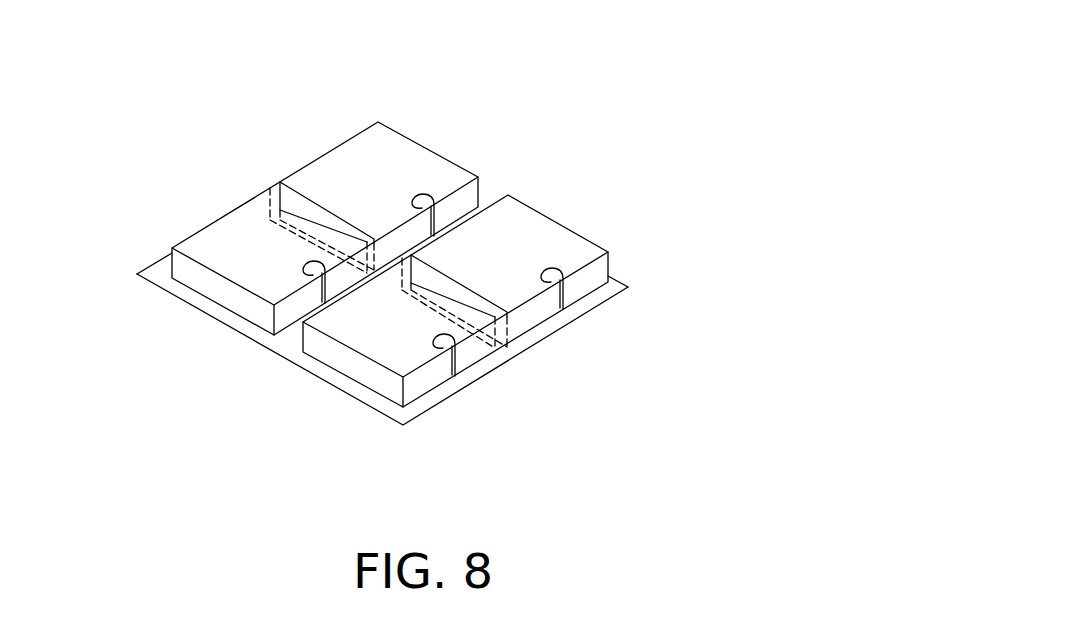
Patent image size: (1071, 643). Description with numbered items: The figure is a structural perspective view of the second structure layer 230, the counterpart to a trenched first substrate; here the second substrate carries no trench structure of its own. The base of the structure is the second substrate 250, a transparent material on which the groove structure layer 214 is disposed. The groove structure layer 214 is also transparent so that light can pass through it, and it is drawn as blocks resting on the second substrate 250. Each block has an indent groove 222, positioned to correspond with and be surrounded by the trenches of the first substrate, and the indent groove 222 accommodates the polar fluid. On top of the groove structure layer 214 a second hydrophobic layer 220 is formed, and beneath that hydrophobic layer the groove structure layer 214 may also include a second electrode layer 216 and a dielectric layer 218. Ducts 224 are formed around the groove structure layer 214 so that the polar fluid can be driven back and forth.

The second structure layer 230 is at (470, 263).
The second hydrophobic layer 220 is at (509, 327).
The groove structure layer 214 is at (553, 301).
The second electrode layer 216 is at (603, 312).
The dielectric layer 218 is at (617, 255).
The second substrate 250 is at (612, 292).
The indent groove 222 is at (438, 330).
The duct 224 is at (505, 343).